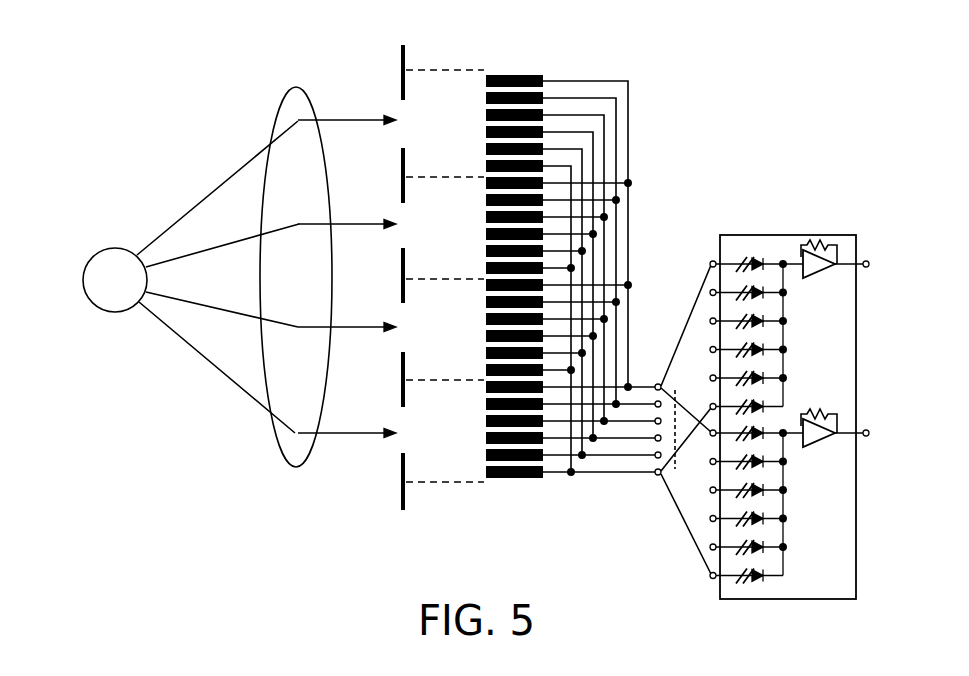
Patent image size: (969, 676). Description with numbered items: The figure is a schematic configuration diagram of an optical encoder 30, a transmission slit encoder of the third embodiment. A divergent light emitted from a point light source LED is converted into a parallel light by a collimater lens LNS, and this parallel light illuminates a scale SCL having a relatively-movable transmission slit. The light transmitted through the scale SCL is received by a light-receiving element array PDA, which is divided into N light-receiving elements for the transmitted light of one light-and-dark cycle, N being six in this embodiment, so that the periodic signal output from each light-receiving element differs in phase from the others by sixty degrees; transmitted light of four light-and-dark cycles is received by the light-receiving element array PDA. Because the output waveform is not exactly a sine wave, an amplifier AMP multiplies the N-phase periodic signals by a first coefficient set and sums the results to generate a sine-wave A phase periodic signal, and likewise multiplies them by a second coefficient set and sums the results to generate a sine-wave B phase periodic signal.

The optical encoder 30 is at (777, 99).
The point light source LED is at (115, 280).
The collimater lens LNS is at (296, 295).
The scale SCL is at (401, 292).
The light-receiving element array PDA is at (516, 308).
The amplifier AMP is at (815, 403).